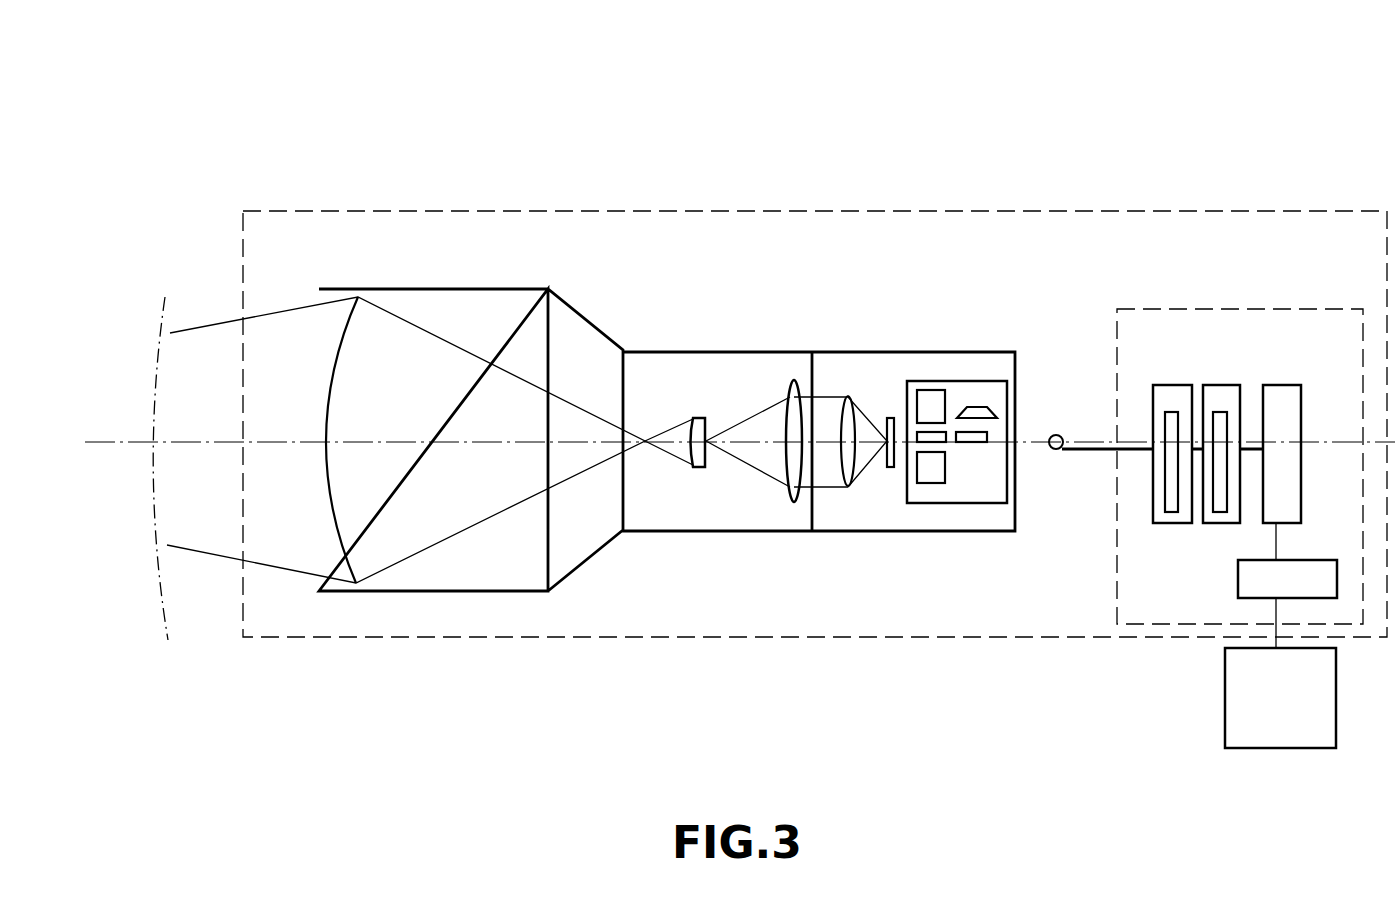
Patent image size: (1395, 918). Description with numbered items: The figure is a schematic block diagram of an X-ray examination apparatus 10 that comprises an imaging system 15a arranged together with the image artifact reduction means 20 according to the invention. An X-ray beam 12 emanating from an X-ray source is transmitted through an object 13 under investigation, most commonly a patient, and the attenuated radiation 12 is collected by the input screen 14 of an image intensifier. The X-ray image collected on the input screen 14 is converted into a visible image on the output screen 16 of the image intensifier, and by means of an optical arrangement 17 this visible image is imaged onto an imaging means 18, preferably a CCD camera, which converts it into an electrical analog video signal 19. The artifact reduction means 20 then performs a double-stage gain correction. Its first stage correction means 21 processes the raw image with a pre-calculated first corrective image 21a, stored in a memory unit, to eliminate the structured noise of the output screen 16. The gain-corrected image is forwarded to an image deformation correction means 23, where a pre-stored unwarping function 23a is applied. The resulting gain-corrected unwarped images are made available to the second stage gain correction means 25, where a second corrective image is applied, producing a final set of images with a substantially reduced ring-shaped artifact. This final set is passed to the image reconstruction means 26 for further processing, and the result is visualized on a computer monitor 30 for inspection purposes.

The X-ray examination apparatus 10 is at (219, 127).
The X-ray beam 12 is at (197, 327).
The object 13 is at (162, 360).
The input screen 14 is at (330, 370).
The imaging system 15a is at (820, 210).
The output screen 16 is at (695, 418).
The optical arrangement 17 is at (828, 397).
The imaging means 18 is at (927, 380).
The electrical analog video signal 19 is at (1058, 435).
The artifact reduction means 20 is at (1195, 308).
The first stage correction means 21 is at (1175, 385).
The first corrective image 21a is at (1168, 512).
The image deformation correction means 23 is at (1228, 385).
The unwarping function 23a is at (1223, 512).
The second stage gain correction means 25 is at (1292, 385).
The image reconstruction means 26 is at (1250, 598).
The computer monitor 30 is at (1293, 750).